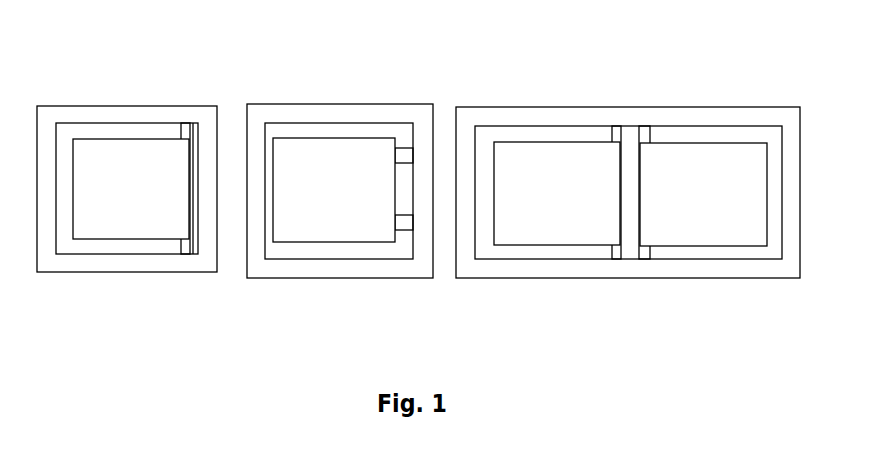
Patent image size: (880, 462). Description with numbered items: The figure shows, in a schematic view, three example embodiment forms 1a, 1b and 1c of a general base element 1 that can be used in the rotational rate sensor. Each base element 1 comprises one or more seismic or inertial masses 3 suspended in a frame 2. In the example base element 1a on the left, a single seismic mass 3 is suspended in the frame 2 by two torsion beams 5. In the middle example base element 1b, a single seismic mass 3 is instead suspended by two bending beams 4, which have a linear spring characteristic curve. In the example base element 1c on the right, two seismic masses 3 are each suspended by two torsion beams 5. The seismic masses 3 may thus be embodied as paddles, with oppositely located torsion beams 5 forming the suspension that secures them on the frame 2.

The base element 1 is at (73, 63).
The example base element 1a is at (167, 100).
The example base element 1b is at (360, 102).
The example base element 1c is at (620, 103).
The frame 2 is at (155, 260).
The seismic mass 3 is at (73, 238).
The bending beam 4 is at (411, 218).
The torsion beam 5 is at (185, 254).